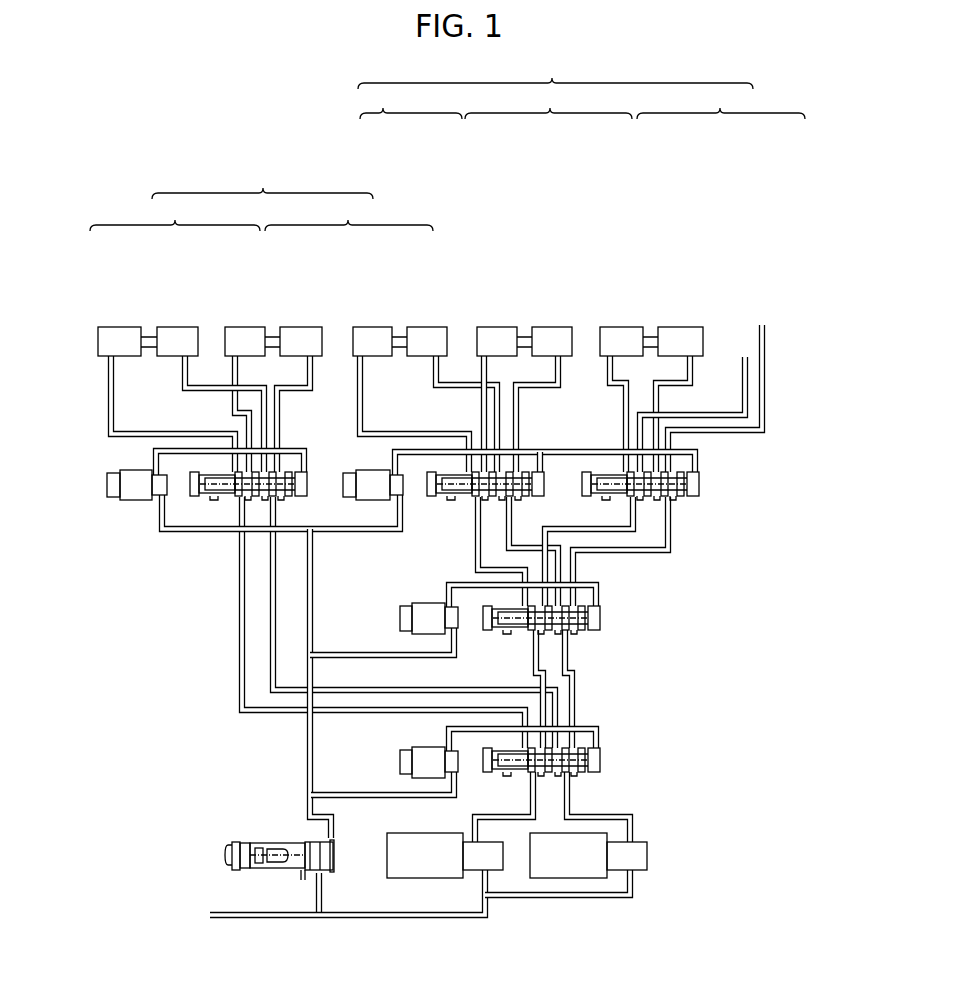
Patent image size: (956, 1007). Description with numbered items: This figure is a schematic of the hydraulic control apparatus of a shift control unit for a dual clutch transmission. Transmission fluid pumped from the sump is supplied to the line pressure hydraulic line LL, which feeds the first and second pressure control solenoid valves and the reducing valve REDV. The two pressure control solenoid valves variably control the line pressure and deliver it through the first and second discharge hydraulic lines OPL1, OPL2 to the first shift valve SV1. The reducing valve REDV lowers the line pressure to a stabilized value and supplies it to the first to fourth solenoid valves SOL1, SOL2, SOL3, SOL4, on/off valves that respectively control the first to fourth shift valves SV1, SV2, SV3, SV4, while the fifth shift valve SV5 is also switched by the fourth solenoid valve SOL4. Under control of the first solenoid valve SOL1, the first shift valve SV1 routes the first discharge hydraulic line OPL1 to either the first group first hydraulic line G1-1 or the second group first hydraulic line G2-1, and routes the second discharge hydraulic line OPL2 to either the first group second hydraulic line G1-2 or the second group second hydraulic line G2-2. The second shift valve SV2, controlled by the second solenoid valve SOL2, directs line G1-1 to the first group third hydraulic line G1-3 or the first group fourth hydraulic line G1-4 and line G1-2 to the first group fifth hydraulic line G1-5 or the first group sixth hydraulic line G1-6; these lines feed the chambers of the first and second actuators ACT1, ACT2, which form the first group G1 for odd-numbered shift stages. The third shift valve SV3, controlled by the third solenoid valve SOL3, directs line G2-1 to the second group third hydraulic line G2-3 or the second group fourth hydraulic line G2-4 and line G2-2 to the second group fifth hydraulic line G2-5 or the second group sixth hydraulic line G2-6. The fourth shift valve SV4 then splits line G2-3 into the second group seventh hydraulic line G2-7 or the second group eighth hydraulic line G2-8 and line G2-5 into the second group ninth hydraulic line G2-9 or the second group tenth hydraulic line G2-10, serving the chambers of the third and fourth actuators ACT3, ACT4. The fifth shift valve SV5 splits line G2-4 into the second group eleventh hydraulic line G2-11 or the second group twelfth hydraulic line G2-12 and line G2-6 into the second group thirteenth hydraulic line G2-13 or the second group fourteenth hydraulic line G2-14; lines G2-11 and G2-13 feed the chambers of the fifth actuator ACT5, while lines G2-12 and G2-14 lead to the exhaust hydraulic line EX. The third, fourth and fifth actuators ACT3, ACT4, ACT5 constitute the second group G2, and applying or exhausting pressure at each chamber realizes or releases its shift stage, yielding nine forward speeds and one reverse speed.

The first group G1 is at (262, 185).
The second group G2 is at (555, 74).
The first actuator ACT1 is at (175, 215).
The second actuator ACT2 is at (349, 215).
The third actuator ACT3 is at (411, 103).
The fourth actuator ACT4 is at (548, 103).
The fifth actuator ACT5 is at (721, 103).
The first group first hydraulic line G1-1 is at (342, 712).
The first group second hydraulic line G1-2 is at (334, 692).
The first group third hydraulic line G1-3 is at (133, 437).
The first group fourth hydraulic line G1-4 is at (232, 371).
The first group fifth hydraulic line G1-5 is at (199, 388).
The first group sixth hydraulic line G1-6 is at (313, 372).
The second group first hydraulic line G2-1 is at (533, 656).
The second group second hydraulic line G2-2 is at (566, 656).
The second group third hydraulic line G2-3 is at (478, 560).
The second group fourth hydraulic line G2-4 is at (613, 530).
The second group fifth hydraulic line G2-5 is at (511, 505).
The second group sixth hydraulic line G2-6 is at (618, 550).
The second group seventh hydraulic line G2-7 is at (387, 434).
The second group eighth hydraulic line G2-8 is at (466, 353).
The second group ninth hydraulic line G2-9 is at (447, 387).
The second group tenth hydraulic line G2-10 is at (560, 375).
The second group eleventh hydraulic line G2-11 is at (590, 353).
The second group twelfth hydraulic line G2-12 is at (743, 400).
The second group thirteenth hydraulic line G2-13 is at (712, 353).
The second group fourteenth hydraulic line G2-14 is at (746, 433).
The first shift valve SV1 is at (606, 745).
The second shift valve SV2 is at (312, 462).
The third shift valve SV3 is at (609, 607).
The fourth shift valve SV4 is at (430, 509).
The fifth shift valve SV5 is at (697, 510).
The first solenoid valve SOL1 is at (400, 767).
The second solenoid valve SOL2 is at (128, 501).
The third solenoid valve SOL3 is at (400, 620).
The fourth solenoid valve SOL4 is at (358, 498).
The exhaust hydraulic line EX is at (707, 386).
The first discharge hydraulic line OPL1 is at (533, 794).
The second discharge hydraulic line OPL2 is at (566, 794).
The reducing valve REDV is at (224, 828).
The line pressure hydraulic line LL is at (363, 917).